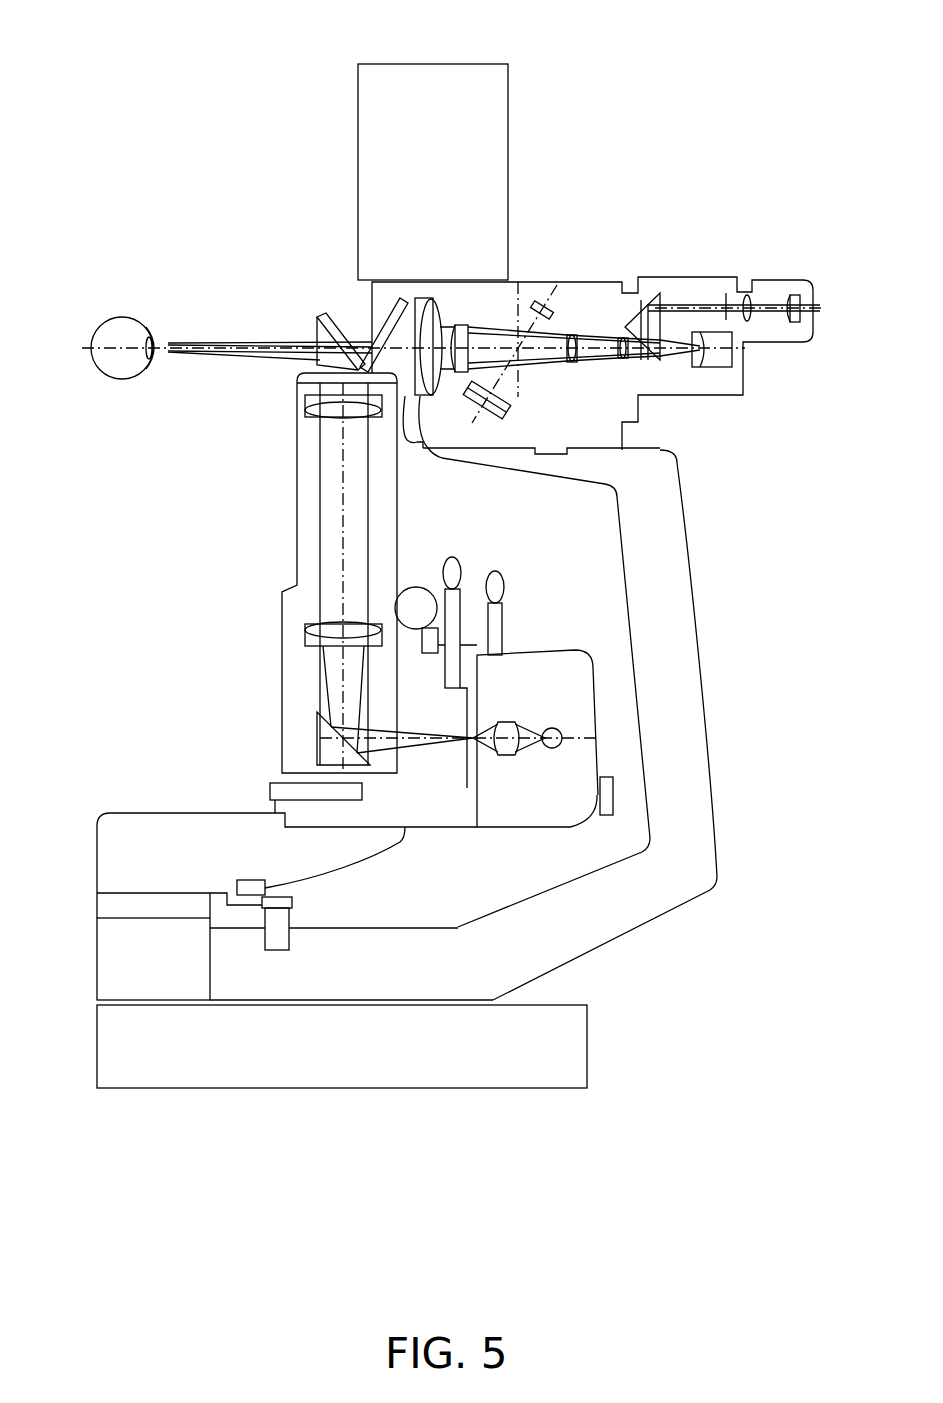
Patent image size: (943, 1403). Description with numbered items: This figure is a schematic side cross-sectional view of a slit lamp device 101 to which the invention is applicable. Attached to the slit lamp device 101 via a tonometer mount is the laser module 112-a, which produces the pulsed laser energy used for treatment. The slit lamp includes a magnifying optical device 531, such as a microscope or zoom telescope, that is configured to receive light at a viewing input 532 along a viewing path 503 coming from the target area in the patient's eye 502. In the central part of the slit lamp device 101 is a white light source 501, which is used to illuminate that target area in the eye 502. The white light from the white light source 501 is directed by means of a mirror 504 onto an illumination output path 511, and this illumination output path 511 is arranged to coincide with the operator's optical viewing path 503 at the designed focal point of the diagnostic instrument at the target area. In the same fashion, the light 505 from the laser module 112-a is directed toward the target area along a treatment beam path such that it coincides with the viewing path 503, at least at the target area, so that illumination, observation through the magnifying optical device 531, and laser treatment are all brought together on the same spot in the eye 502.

The slit lamp device 101 is at (140, 58).
The laser module 112-a is at (467, 217).
The white light source 501 is at (560, 738).
The eye 502 is at (122, 317).
The viewing path 503 is at (417, 445).
The mirror 504 is at (315, 324).
The light from the laser 505 is at (370, 297).
The illumination output path 511 is at (270, 362).
The magnifying optical device 531 is at (585, 285).
The viewing input 532 is at (442, 458).